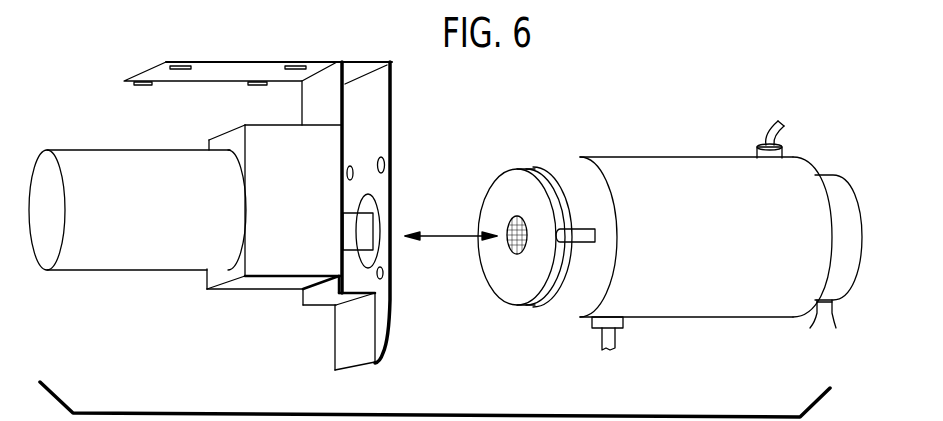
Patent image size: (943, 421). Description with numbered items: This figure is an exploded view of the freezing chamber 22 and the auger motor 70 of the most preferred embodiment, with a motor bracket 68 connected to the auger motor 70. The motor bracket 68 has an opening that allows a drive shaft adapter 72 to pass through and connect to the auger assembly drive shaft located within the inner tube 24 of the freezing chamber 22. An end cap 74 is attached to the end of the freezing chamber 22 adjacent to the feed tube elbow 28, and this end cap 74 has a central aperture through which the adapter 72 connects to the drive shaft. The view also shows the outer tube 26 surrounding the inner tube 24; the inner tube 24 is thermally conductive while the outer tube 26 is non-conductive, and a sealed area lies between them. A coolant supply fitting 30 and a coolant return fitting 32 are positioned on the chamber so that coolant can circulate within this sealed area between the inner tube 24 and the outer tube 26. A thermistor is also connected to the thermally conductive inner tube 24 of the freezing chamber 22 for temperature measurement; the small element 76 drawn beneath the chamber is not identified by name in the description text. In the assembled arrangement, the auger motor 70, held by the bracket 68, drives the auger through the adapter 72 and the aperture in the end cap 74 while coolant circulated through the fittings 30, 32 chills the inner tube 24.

The freezing chamber 22 is at (649, 247).
The inner tube 24 is at (833, 187).
The outer tube 26 is at (622, 165).
The feed tube elbow 28 is at (595, 235).
The coolant supply fitting 30 is at (758, 145).
The coolant return fitting 32 is at (610, 338).
The motor bracket 68 is at (229, 72).
The auger motor 70 is at (128, 246).
The drive shaft adapter 72 is at (364, 236).
The end cap 74 is at (510, 180).
The tab 76 is at (823, 315).